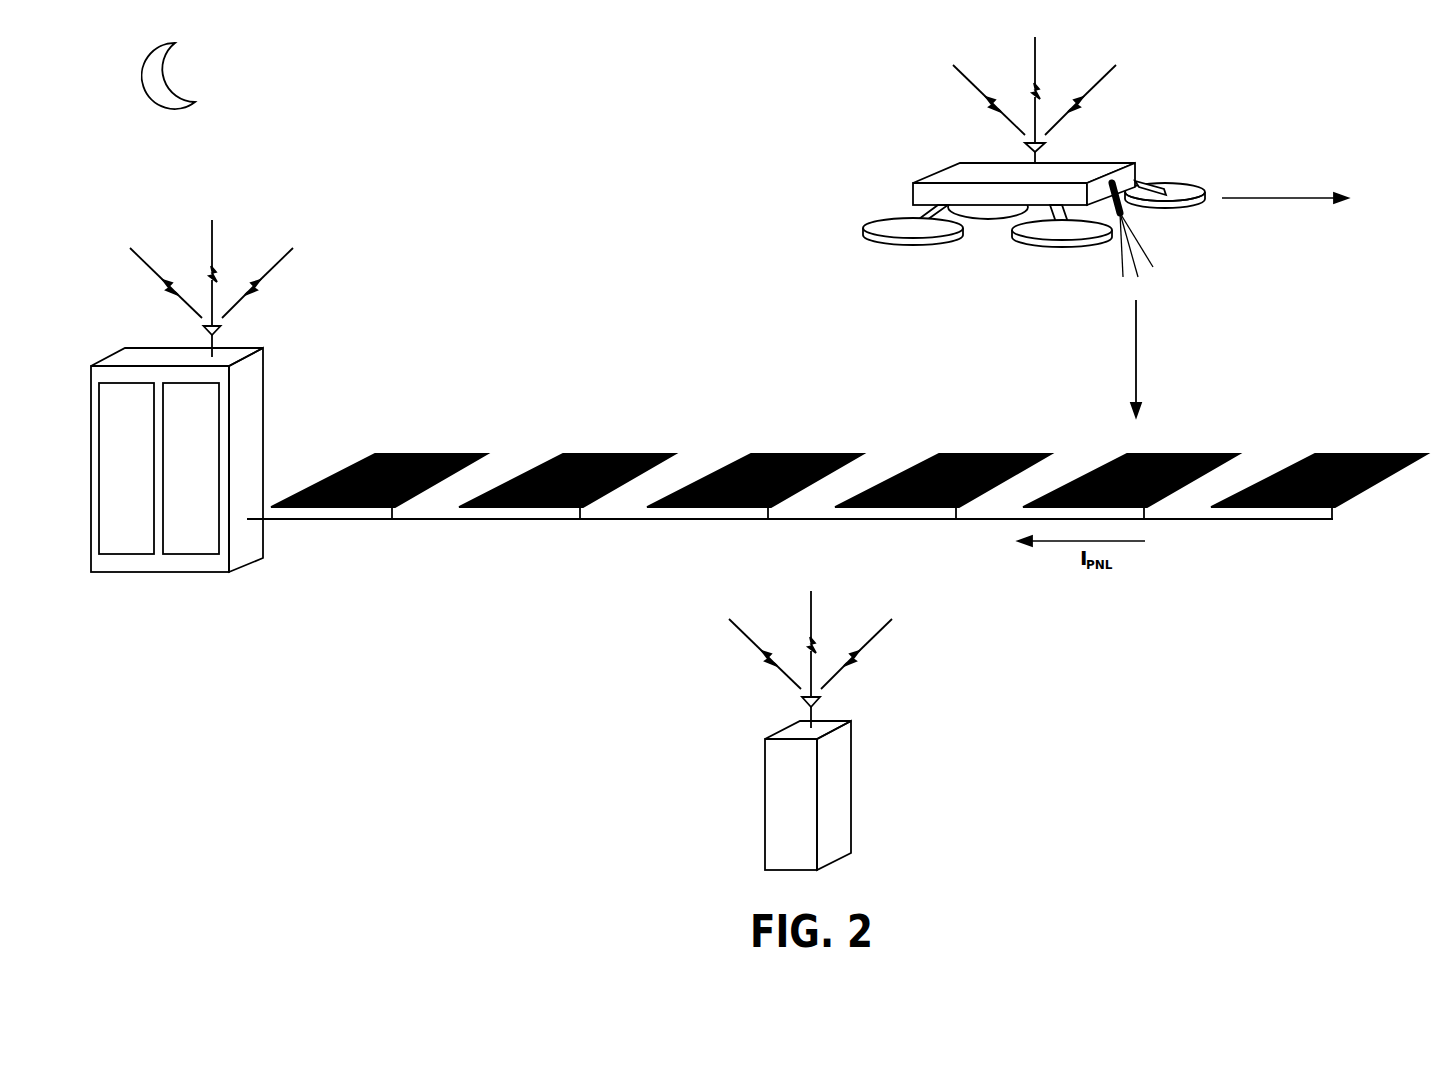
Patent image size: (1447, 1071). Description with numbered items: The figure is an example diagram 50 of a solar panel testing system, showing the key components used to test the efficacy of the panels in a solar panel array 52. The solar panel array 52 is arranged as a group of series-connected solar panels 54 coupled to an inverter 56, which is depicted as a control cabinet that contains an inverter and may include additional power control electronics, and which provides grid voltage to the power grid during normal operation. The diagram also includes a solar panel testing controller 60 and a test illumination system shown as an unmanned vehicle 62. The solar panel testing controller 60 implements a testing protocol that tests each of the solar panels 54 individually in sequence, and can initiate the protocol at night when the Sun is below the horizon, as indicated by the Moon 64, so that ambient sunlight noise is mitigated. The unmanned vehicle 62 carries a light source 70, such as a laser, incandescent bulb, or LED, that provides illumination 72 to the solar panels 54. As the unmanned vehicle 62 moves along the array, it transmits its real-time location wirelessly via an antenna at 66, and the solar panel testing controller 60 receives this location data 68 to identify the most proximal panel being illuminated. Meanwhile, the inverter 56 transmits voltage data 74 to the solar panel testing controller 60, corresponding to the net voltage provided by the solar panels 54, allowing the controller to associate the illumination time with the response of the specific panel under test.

The diagram 50 is at (1340, 60).
The solar panel array 52 is at (870, 332).
The solar panels 54 is at (428, 453).
The inverter 56 is at (263, 400).
The solar panel testing controller 60 is at (851, 765).
The unmanned vehicle 62 is at (905, 135).
The Moon 64 is at (225, 135).
The wireless transmission via an antenna 66 is at (1131, 100).
The location data 68 is at (906, 655).
The light source 70 is at (1150, 238).
The illumination 72 is at (1090, 322).
The voltage data 74 is at (300, 287).